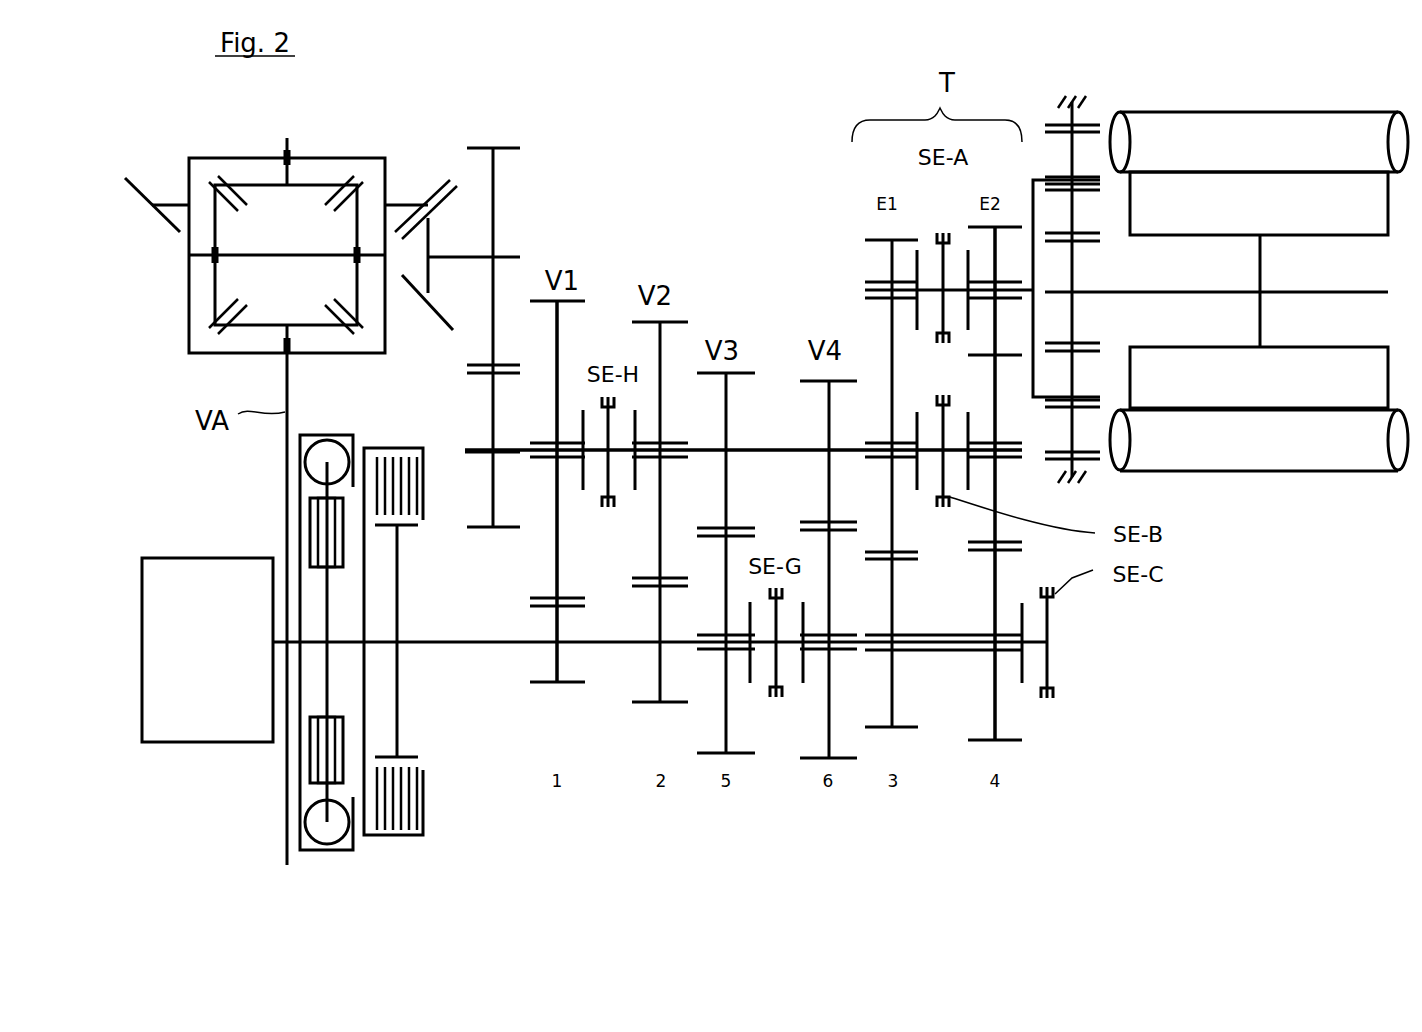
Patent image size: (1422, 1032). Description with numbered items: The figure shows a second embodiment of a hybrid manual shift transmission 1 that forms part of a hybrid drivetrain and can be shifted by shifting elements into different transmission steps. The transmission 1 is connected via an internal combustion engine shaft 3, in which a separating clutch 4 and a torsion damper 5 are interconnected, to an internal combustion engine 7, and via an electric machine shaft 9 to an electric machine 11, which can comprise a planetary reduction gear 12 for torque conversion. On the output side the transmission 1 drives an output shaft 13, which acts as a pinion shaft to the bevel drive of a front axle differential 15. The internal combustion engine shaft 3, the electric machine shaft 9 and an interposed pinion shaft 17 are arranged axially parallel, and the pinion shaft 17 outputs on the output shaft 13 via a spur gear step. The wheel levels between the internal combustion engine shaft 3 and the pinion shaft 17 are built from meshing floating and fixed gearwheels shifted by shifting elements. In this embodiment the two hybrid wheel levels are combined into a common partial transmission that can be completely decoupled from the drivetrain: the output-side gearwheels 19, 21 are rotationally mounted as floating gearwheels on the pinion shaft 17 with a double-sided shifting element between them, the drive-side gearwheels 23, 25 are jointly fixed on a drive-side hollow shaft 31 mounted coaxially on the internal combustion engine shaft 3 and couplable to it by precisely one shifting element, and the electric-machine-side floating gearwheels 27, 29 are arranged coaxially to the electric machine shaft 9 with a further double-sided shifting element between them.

The manual shift transmission 1 is at (757, 182).
The internal combustion engine shaft 3 is at (481, 646).
The separating clutch 4 is at (405, 836).
The torsion damper 5 is at (326, 852).
The internal combustion engine 7 is at (197, 657).
The electric machine shaft 9 is at (1060, 292).
The electric machine 11 is at (1193, 106).
The planetary reduction gear 12 is at (1068, 158).
The output shaft 13 is at (503, 257).
The front axle differential 15 is at (332, 157).
The pinion shaft 17 is at (477, 447).
The output-side gearwheel 19 is at (942, 432).
The output-side gearwheel 21 is at (986, 521).
The drive-side gearwheel 23 is at (877, 730).
The drive-side gearwheel 25 is at (1010, 742).
The floating gearwheel 27 is at (889, 274).
The floating gearwheel 29 is at (874, 290).
The drive-side hollow shaft 31 is at (947, 652).